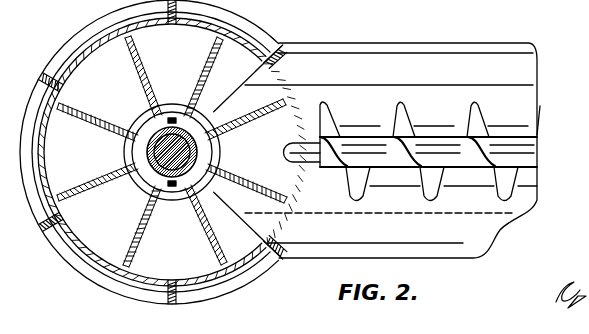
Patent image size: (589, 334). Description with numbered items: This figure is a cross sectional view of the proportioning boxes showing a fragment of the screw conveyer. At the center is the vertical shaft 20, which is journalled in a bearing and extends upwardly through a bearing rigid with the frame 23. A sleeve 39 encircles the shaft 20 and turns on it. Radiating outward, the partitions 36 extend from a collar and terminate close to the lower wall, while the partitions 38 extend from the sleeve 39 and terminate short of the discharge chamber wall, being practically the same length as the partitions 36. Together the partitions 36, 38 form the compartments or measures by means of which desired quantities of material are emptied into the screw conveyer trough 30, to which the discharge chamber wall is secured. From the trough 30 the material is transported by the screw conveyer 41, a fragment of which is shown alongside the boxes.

The vertical shaft 20 is at (139, 184).
The frame 23 is at (262, 38).
The screw conveyer trough 30 is at (498, 234).
The partitions 36 is at (134, 58).
The partitions 38 is at (107, 121).
The sleeve 39 is at (126, 163).
The screw conveyer 41 is at (477, 108).